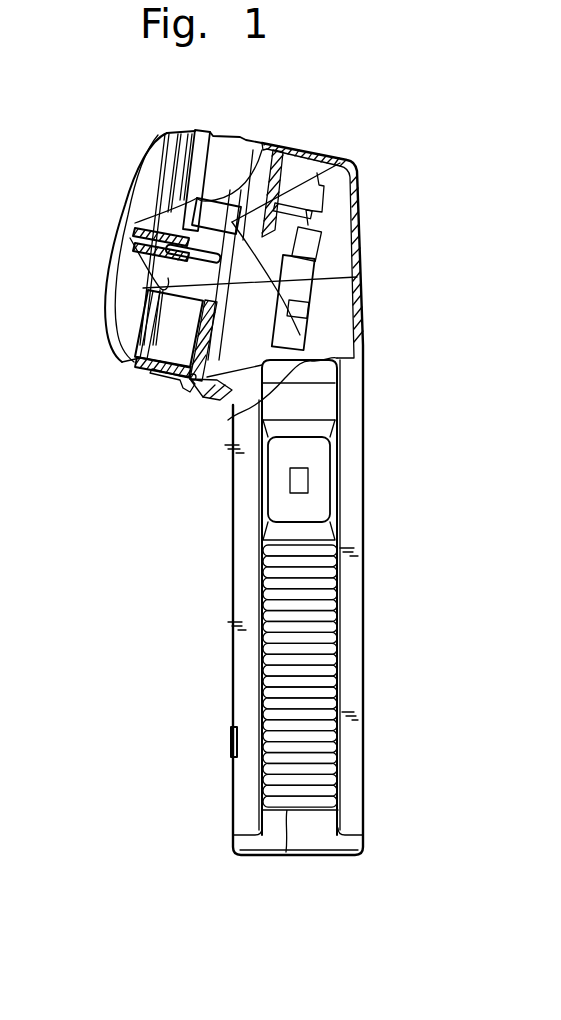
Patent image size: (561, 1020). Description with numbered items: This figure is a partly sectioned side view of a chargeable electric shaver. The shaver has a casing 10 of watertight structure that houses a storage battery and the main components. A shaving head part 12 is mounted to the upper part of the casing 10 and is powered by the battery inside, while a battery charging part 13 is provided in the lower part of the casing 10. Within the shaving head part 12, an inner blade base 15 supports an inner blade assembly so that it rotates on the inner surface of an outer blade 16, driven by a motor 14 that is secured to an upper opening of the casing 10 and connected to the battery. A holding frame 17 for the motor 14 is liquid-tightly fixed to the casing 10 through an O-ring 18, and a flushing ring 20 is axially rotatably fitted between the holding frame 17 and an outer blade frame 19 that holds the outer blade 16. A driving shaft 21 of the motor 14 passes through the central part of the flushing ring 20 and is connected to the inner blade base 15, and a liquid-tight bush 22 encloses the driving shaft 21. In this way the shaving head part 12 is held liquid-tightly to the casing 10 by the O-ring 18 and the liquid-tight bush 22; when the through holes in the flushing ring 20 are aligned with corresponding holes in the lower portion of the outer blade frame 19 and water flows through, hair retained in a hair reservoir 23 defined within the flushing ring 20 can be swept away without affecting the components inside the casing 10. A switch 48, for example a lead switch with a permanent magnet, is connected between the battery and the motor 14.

The casing 10 is at (358, 340).
The shaving head part 12 is at (252, 142).
The battery charging part 13 is at (318, 852).
The motor 14 is at (245, 378).
The inner blade base 15 is at (221, 133).
The outer blade 16 is at (113, 235).
The holding frame 17 is at (200, 388).
The O-ring 18 is at (215, 392).
The outer blade frame 19 is at (128, 352).
The flushing ring 20 is at (160, 370).
The driving shaft 21 is at (330, 173).
The liquid-tight bush 22 is at (357, 277).
The hair reservoir 23 is at (162, 323).
The switch 48 is at (320, 490).